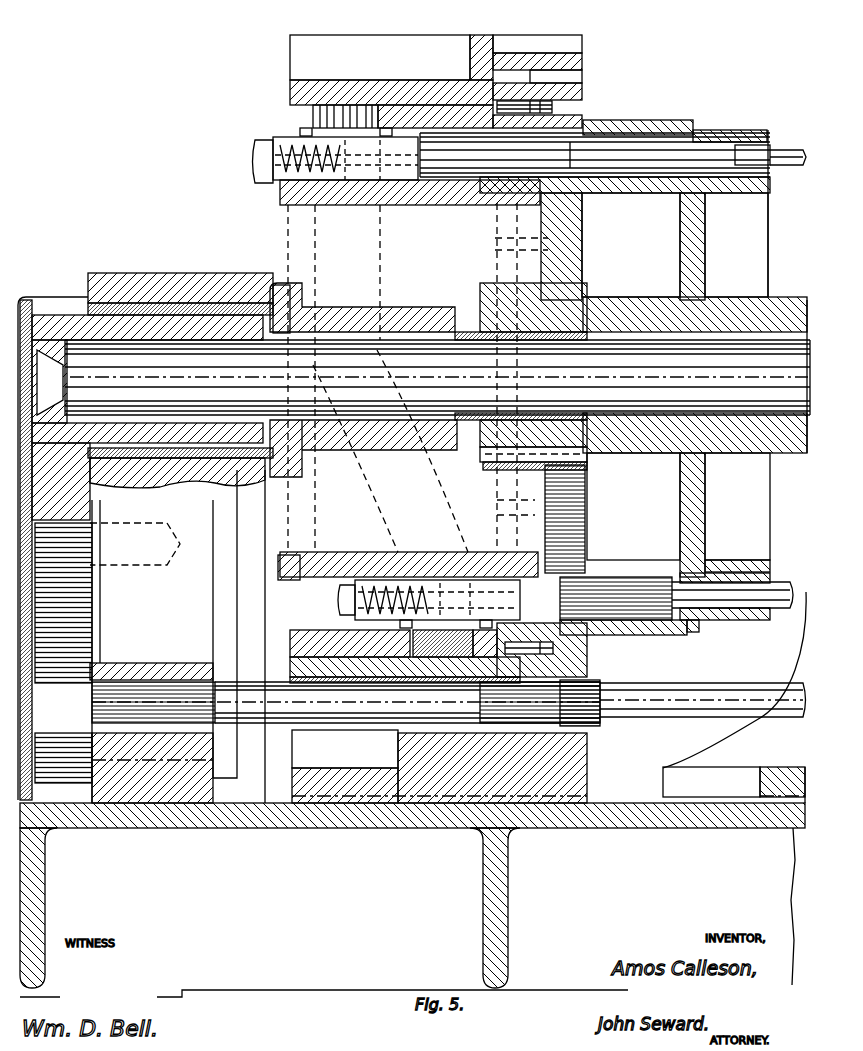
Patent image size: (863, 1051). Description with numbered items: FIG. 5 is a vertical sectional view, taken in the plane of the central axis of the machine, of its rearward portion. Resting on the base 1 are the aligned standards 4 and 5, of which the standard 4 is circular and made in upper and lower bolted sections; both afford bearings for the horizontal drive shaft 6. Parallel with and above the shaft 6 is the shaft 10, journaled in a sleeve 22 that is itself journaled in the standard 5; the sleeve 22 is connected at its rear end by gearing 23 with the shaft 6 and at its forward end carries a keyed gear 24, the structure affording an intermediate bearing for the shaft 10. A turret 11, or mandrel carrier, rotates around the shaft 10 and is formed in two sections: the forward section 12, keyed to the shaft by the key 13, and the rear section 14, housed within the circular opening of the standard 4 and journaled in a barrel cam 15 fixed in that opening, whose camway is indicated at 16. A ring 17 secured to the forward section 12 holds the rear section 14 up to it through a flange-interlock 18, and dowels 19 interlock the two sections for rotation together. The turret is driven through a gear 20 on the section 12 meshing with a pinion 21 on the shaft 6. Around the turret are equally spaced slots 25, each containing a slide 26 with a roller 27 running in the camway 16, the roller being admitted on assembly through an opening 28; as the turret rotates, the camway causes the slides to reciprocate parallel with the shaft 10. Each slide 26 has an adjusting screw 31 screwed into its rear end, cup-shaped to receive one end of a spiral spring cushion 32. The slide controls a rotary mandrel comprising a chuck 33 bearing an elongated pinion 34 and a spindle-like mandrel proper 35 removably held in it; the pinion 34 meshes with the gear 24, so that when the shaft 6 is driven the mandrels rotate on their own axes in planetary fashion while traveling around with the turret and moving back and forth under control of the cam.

The base 1 is at (592, 828).
The standard 4 is at (585, 776).
The standard 5 is at (268, 752).
The drive shaft 6 is at (705, 691).
The shaft 10 is at (437, 377).
The turret 11 is at (623, 637).
The forward turret section 12 is at (689, 632).
The key 13 is at (630, 332).
The rear turret section 14 is at (456, 186).
The barrel cam 15 is at (432, 100).
The camway 16 is at (360, 280).
The ring 17 is at (510, 87).
The flange-interlock 18 is at (505, 150).
The dowels 19 is at (495, 248).
The gear 20 is at (588, 672).
The pinion 21 is at (592, 722).
The sleeve 22 is at (418, 320).
The gearing 23 is at (100, 640).
The gear 24 is at (585, 517).
The slots 25 is at (332, 600).
The slide 26 is at (378, 172).
The roller 27 is at (392, 683).
The opening 28 is at (300, 112).
The adjusting screw 31 is at (409, 617).
The spiral spring cushion 32 is at (400, 553).
The chuck 33 is at (778, 586).
The elongated pinion 34 is at (625, 578).
The mandrel proper 35 is at (779, 164).